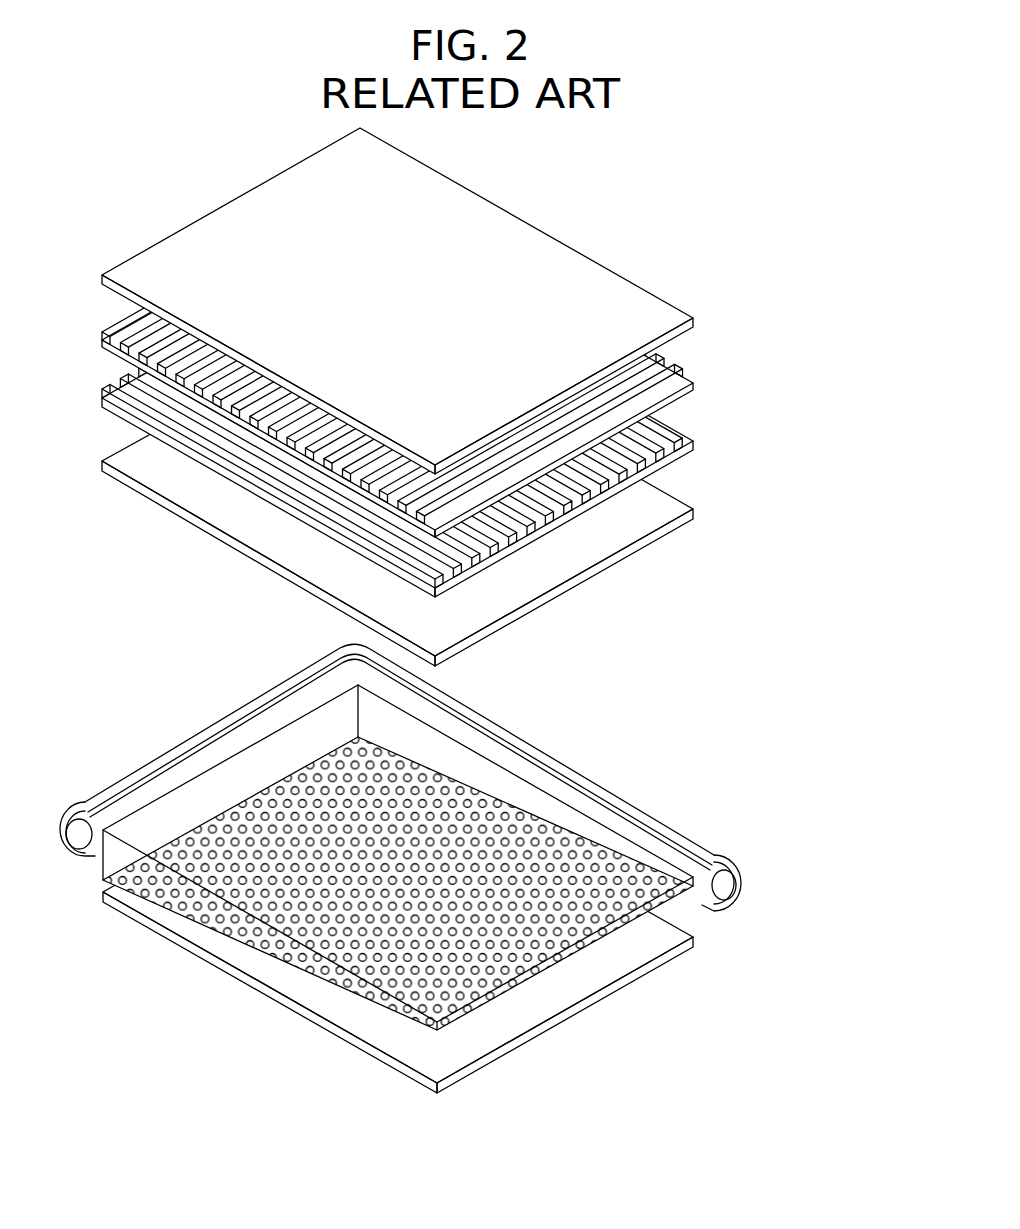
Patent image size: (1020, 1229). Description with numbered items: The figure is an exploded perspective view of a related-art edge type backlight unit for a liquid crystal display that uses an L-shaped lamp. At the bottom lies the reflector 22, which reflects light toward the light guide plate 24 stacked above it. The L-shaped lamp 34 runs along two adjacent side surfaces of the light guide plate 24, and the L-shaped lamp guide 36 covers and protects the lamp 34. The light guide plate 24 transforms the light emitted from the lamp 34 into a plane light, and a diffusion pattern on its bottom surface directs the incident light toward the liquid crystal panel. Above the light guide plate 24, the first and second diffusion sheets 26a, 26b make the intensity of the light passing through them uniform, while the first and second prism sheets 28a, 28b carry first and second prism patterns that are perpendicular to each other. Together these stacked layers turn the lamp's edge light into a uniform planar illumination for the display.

The reflector 22 is at (650, 962).
The light guide plate 24 is at (578, 842).
The first diffusion sheet 26a is at (672, 507).
The second diffusion sheet 26b is at (607, 293).
The first prism sheet 28a is at (677, 435).
The second prism sheet 28b is at (692, 373).
The L-shaped lamp 34 is at (722, 887).
The L-shaped lamp guide 36 is at (712, 843).